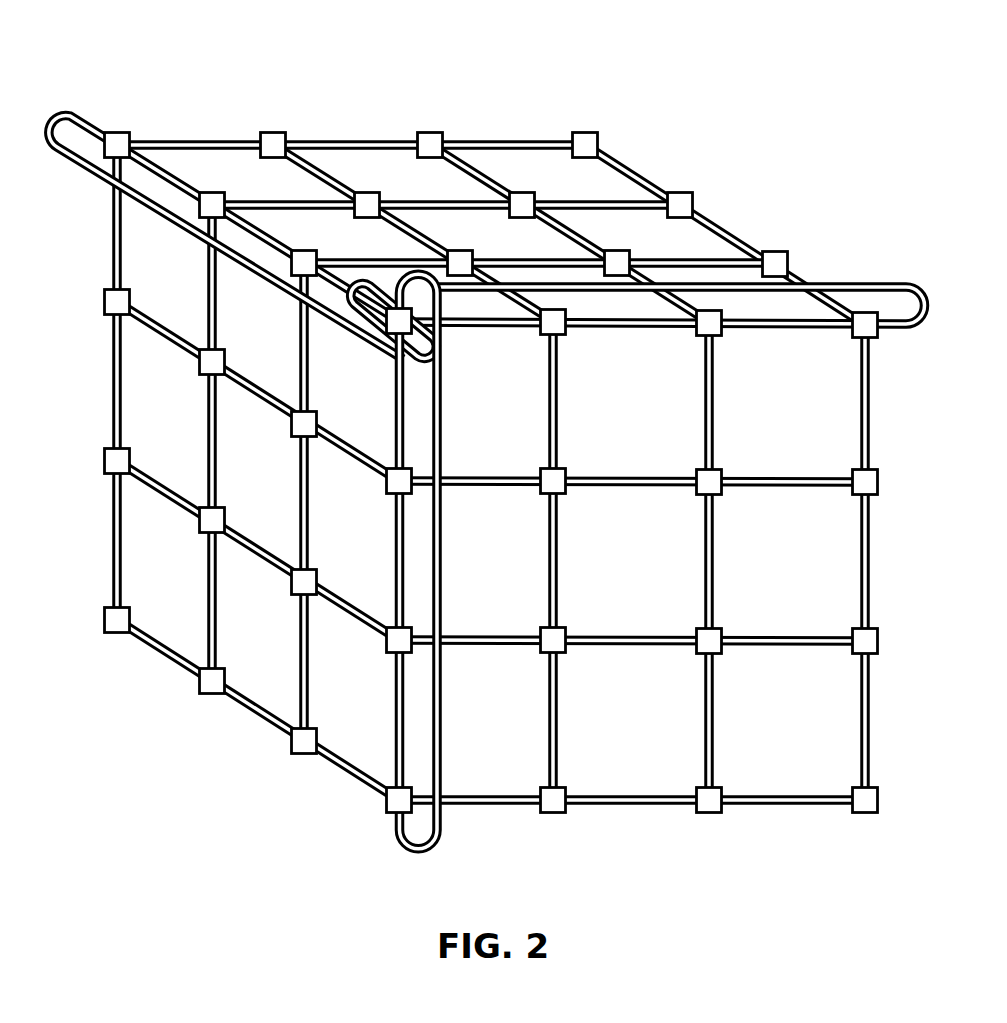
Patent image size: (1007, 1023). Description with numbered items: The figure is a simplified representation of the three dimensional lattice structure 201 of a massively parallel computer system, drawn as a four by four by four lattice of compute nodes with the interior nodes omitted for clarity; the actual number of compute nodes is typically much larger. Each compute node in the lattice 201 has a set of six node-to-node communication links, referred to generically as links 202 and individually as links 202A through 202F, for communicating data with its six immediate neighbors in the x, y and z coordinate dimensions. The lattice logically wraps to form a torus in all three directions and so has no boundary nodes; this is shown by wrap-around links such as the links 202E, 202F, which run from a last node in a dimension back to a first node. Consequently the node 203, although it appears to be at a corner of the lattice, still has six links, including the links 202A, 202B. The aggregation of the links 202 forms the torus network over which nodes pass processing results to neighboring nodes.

The three dimensional lattice structure 201 is at (486, 470).
The node-to-node communication link 202 is at (872, 282).
The node-to-node communication link 202A is at (521, 330).
The node-to-node communication link 202B is at (396, 413).
The node-to-node communication link 202E is at (418, 852).
The node-to-node communication link 202F is at (75, 113).
The node 203 is at (358, 318).